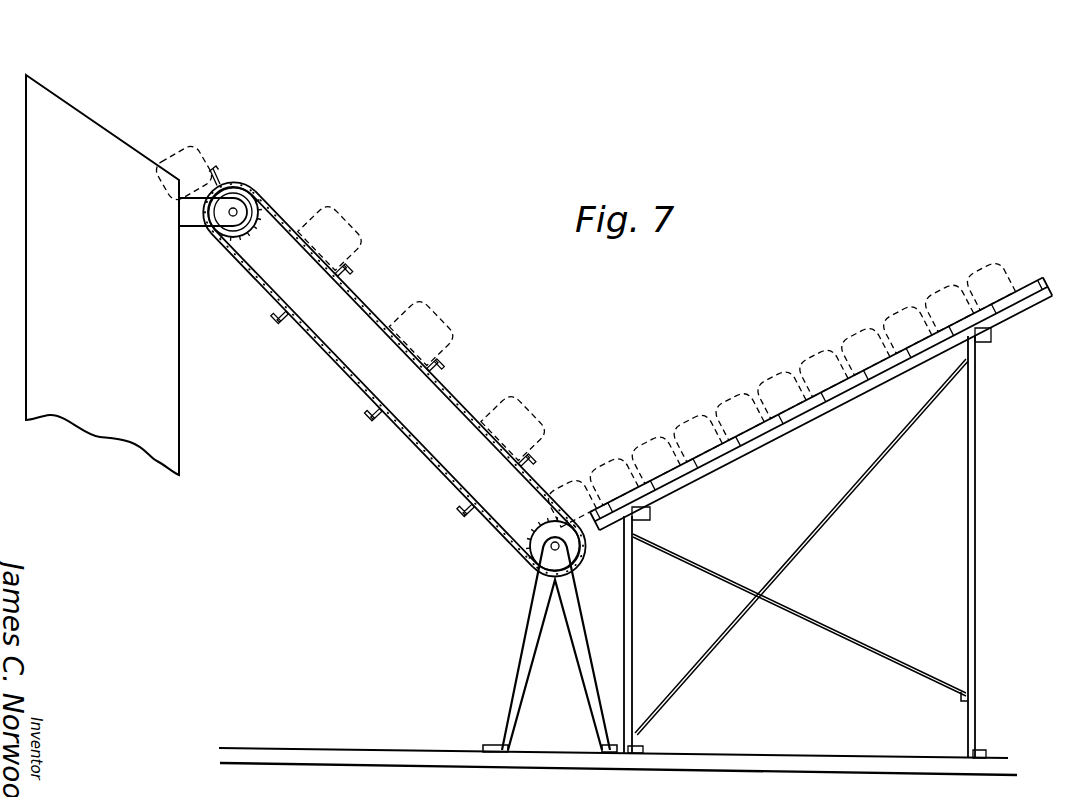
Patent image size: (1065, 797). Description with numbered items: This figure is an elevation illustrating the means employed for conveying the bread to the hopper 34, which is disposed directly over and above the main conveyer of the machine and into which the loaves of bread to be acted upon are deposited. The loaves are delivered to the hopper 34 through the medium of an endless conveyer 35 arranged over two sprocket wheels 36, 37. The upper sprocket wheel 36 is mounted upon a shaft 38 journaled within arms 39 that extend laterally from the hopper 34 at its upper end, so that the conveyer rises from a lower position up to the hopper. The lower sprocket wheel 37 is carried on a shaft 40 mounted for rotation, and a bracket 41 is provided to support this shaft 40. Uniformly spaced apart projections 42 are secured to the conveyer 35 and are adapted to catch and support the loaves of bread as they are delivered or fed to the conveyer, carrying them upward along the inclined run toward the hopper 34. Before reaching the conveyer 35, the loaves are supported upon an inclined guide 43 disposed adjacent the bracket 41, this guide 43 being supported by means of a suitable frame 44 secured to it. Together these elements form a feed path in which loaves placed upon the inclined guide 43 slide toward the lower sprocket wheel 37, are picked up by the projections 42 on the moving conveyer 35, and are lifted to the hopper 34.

The hopper 34 is at (102, 275).
The endless conveyer 35 is at (369, 306).
The sprocket wheel 36 is at (245, 192).
The sprocket wheel 37 is at (553, 527).
The shaft 38 is at (238, 210).
The arms 39 is at (197, 216).
The shaft 40 is at (550, 548).
The bracket 41 is at (538, 616).
The projections 42 is at (444, 366).
The inclined guide 43 is at (676, 486).
The frame 44 is at (705, 568).